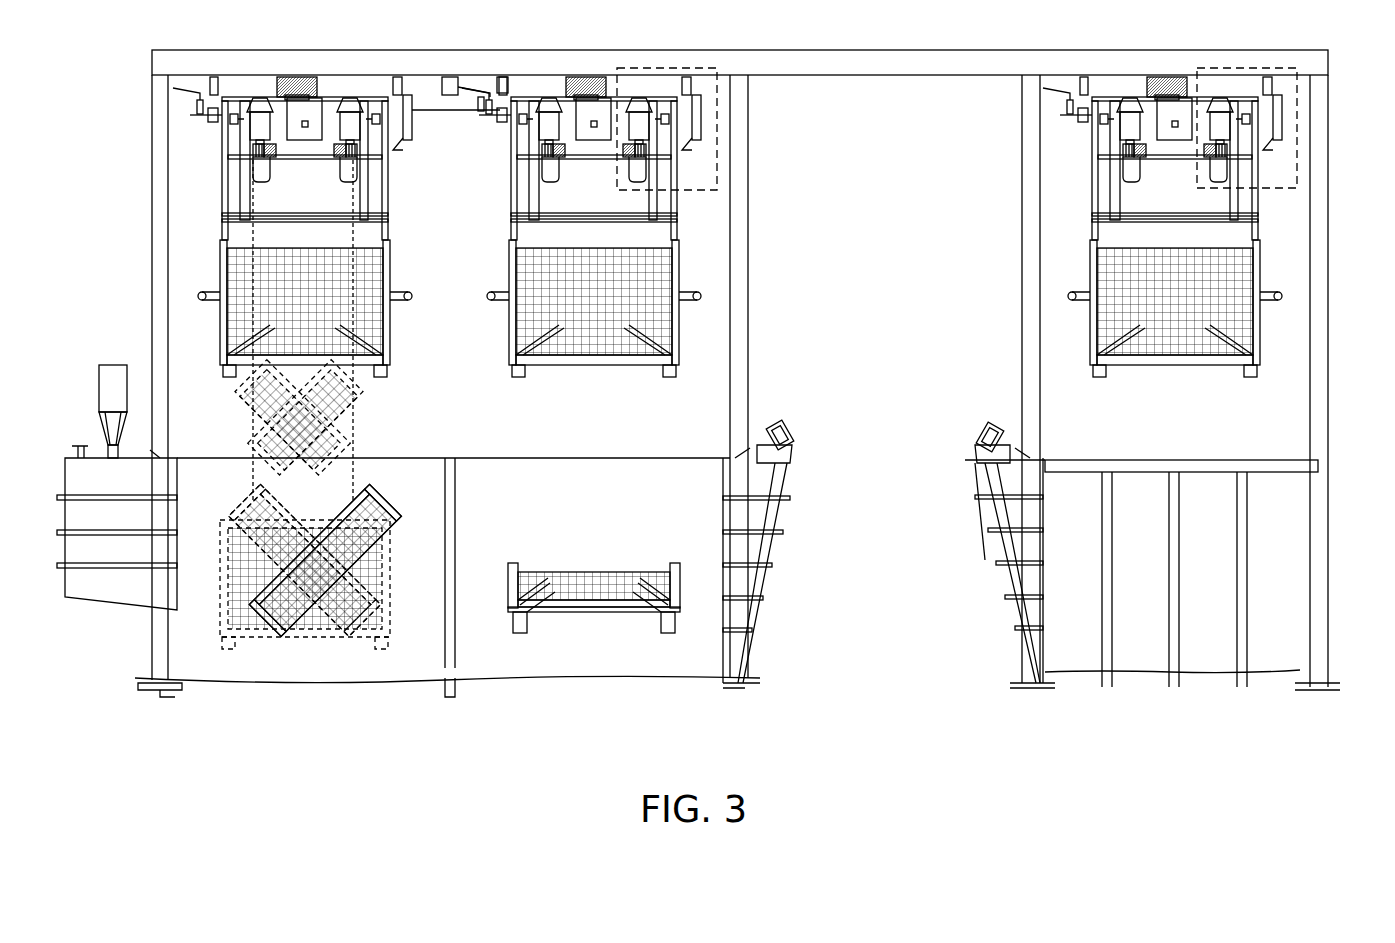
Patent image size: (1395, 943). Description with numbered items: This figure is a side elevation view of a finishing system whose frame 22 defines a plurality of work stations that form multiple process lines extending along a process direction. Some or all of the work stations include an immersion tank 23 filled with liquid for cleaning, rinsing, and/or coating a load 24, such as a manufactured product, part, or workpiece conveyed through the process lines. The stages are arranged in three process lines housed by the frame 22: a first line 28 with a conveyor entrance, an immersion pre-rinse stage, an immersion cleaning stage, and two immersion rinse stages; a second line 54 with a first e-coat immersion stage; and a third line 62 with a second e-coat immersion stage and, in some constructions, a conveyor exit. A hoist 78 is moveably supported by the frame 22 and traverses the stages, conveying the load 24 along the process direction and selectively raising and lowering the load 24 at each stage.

The frame 22 is at (158, 118).
The immersion tank 23 is at (208, 685).
The load 24 is at (700, 312).
The hoist 78 is at (1242, 232).
The first line 28 is at (291, 710).
The second line 54 is at (626, 710).
The third line 62 is at (1207, 700).